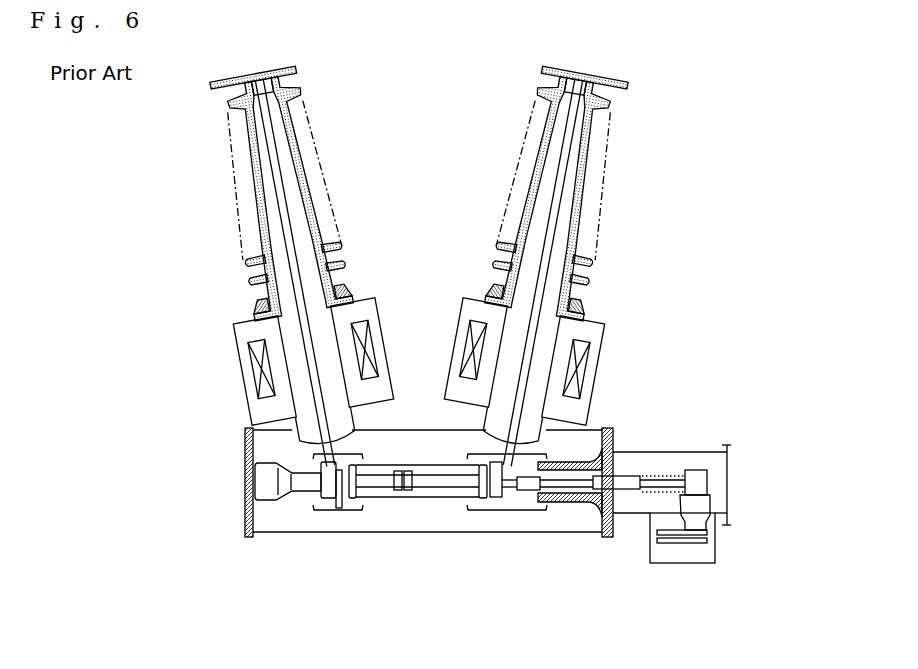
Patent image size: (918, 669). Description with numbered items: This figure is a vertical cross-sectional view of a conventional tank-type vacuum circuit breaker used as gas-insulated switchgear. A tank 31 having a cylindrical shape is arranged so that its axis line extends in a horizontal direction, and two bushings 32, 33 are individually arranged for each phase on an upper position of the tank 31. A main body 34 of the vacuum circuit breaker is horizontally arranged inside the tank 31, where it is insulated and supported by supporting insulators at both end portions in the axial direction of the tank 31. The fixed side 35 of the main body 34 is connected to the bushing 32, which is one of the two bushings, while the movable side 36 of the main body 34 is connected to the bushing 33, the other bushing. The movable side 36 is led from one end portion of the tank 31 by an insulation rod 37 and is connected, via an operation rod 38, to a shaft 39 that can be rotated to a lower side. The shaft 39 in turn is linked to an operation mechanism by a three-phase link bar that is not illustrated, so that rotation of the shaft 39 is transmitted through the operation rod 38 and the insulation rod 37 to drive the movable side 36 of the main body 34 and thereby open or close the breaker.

The tank 31 is at (437, 532).
The bushing 32 is at (233, 188).
The bushing 33 is at (600, 190).
The main body of the vacuum circuit breaker 34 is at (393, 500).
The fixed side 35 is at (328, 508).
The movable side 36 is at (500, 500).
The insulation rod 37 is at (553, 493).
The operation rod 38 is at (662, 477).
The shaft 39 is at (688, 547).